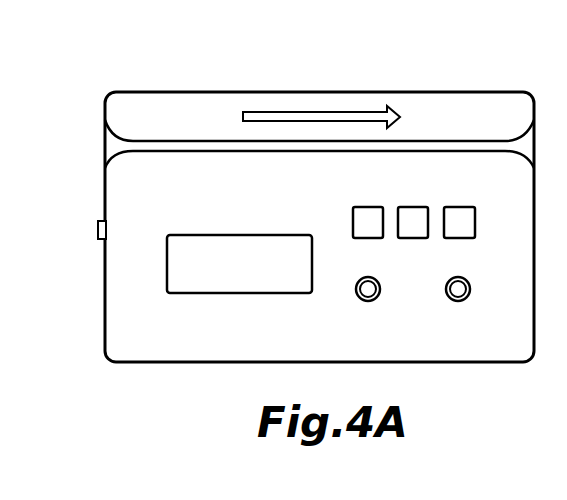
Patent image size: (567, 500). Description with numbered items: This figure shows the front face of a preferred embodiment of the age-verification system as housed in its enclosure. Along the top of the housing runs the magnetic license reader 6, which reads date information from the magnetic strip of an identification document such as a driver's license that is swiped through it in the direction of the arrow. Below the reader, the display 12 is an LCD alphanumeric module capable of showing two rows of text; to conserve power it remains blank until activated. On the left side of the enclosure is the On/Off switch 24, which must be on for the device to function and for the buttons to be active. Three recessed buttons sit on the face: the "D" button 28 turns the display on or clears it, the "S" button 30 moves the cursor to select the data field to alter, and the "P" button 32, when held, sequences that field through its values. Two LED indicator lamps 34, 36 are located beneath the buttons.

The magnetic license reader 6 is at (185, 93).
The display 12 is at (210, 293).
The On/Off switch 24 is at (98, 229).
The "D" button 28 is at (368, 207).
The "S" button 30 is at (413, 207).
The "P" button 32 is at (460, 207).
The indicator lamp 34 is at (368, 301).
The indicator lamp 36 is at (458, 301).